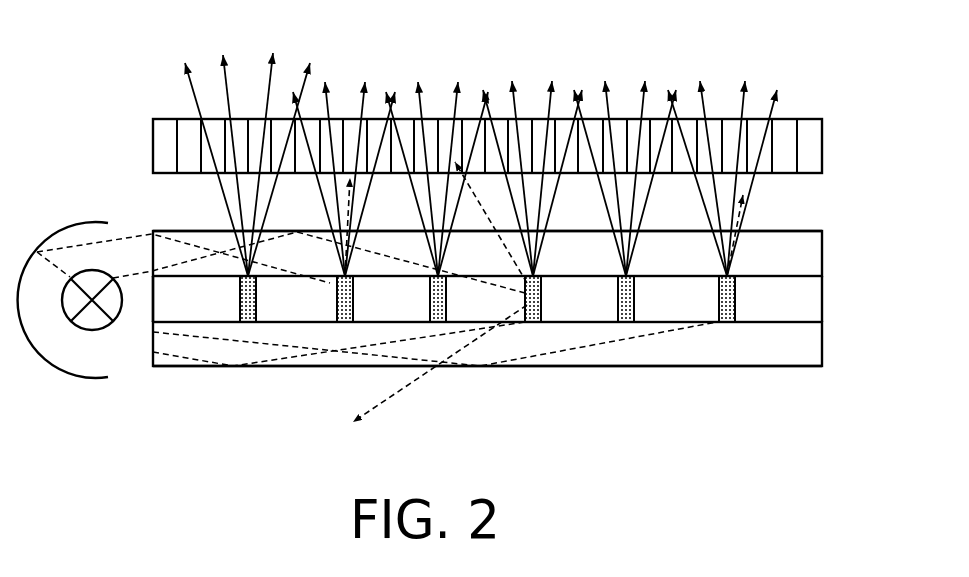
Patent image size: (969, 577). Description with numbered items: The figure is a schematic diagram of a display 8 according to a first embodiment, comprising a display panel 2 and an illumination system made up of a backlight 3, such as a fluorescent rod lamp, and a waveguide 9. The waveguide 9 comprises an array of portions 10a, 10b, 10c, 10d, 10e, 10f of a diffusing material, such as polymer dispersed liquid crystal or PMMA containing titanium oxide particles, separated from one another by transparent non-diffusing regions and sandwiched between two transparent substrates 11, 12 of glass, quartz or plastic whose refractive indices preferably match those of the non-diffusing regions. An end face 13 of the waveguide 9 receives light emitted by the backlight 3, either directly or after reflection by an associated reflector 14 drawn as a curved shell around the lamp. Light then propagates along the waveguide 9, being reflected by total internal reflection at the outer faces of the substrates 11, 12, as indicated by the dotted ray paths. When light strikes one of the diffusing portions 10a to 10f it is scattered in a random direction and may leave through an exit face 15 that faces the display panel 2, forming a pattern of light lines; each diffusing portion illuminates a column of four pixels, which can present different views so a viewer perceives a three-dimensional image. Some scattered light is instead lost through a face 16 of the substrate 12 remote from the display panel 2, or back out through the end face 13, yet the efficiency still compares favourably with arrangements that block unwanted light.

The display panel 2 is at (805, 118).
The backlight 3 is at (100, 332).
The display 8 is at (439, 102).
The waveguide 9 is at (444, 225).
The diffusing portion 10a is at (240, 303).
The diffusing portion 10b is at (337, 303).
The diffusing portion 10c is at (430, 303).
The diffusing portion 10d is at (541, 303).
The diffusing portion 10e is at (634, 303).
The diffusing portion 10f is at (735, 303).
The substrate 11 is at (822, 246).
The substrate 12 is at (822, 340).
The end face 13 is at (153, 310).
The reflector 14 is at (55, 368).
The exit face 15 is at (803, 230).
The face of the substrate remote from the display panel 16 is at (712, 366).